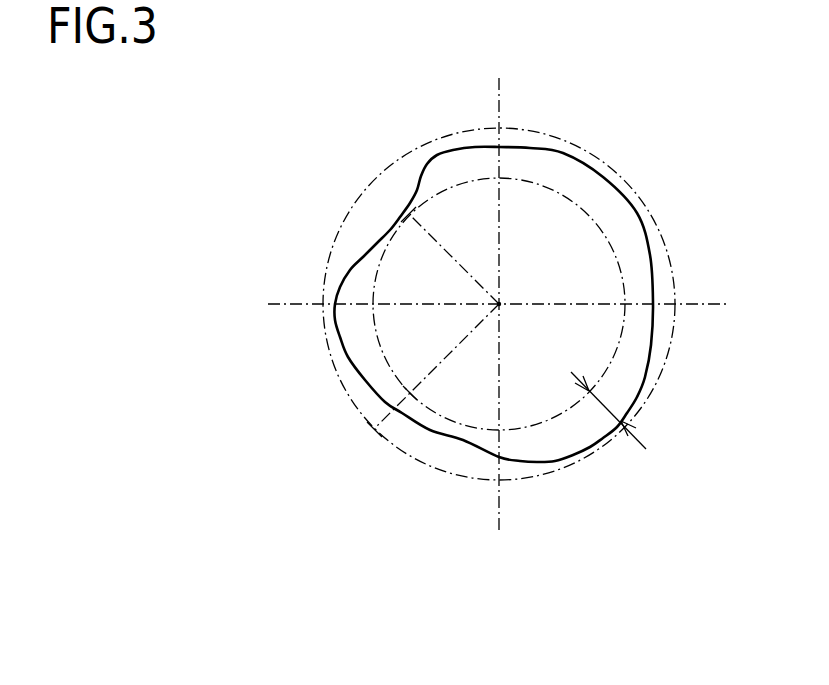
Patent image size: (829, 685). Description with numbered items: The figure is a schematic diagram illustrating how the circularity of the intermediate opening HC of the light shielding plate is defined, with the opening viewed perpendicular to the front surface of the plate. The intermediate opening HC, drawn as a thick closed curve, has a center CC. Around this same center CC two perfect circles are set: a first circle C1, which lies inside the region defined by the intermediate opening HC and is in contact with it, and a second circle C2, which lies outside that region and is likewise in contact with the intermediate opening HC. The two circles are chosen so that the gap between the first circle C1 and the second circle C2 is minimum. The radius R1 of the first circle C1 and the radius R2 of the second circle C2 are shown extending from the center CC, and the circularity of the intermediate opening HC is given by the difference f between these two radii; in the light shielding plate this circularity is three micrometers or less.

The center CC is at (499, 304).
The first circle C1 is at (545, 184).
The second circle C2 is at (337, 376).
The intermediate opening HC is at (639, 208).
The radius of the first circle R1 is at (469, 273).
The radius of the second circle R2 is at (384, 435).
The difference f is at (609, 410).